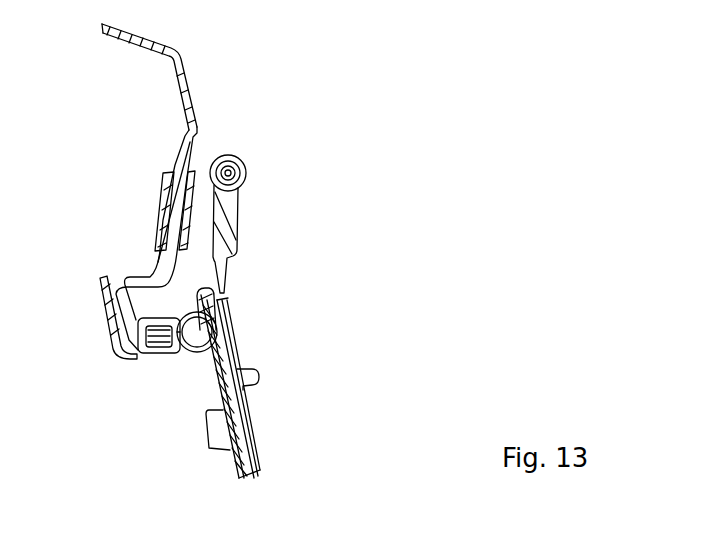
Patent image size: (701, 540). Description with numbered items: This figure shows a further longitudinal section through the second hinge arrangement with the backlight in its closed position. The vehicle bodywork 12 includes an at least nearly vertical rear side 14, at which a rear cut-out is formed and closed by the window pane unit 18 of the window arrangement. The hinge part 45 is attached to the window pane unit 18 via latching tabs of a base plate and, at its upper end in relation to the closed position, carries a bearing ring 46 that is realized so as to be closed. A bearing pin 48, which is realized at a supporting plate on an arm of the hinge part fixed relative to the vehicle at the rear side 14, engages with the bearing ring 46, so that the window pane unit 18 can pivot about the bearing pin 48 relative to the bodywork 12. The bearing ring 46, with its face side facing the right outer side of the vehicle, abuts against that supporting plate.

The vehicle bodywork 12 is at (245, 189).
The rear side 14 is at (178, 67).
The window pane unit 18 is at (230, 472).
The hinge part 45 is at (230, 240).
The bearing ring 46 is at (244, 181).
The bearing pin 48 is at (228, 172).